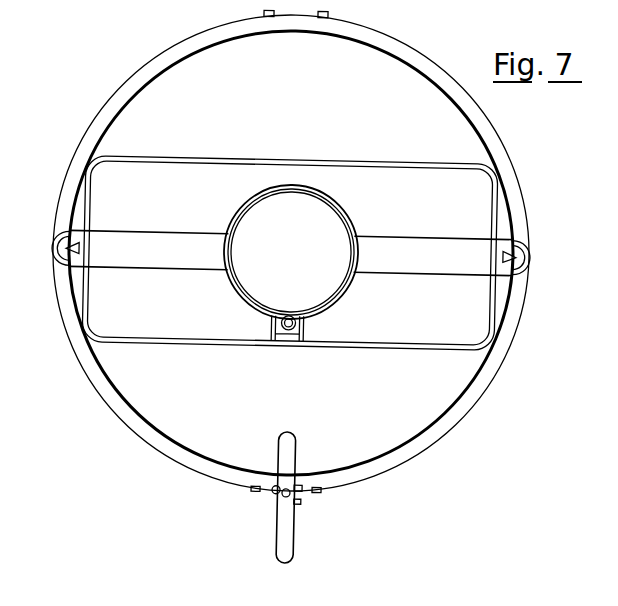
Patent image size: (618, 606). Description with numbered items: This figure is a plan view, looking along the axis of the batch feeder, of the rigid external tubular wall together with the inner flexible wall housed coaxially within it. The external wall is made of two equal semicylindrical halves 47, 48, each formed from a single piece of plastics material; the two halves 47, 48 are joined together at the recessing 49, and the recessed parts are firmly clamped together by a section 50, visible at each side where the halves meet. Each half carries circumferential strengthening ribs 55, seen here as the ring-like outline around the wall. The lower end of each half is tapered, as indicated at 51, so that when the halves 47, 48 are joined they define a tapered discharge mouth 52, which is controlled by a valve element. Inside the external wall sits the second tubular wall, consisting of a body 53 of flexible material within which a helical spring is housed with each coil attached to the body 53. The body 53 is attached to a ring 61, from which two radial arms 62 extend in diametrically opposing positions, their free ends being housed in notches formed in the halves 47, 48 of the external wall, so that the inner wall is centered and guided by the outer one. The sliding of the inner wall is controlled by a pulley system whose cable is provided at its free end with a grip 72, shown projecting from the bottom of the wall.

The semicylindrical half 47 is at (121, 402).
The semicylindrical half 48 is at (130, 95).
The recessing 49 is at (68, 246).
The section 50 is at (52, 258).
The tapered lower end 51 is at (441, 150).
The tapered discharge mouth 52 is at (227, 174).
The body of flexible material 53 is at (335, 198).
The circumferential strengthening ribs 55 is at (420, 58).
The ring 61 is at (352, 222).
The radial arms 62 is at (175, 258).
The grip 72 is at (283, 525).